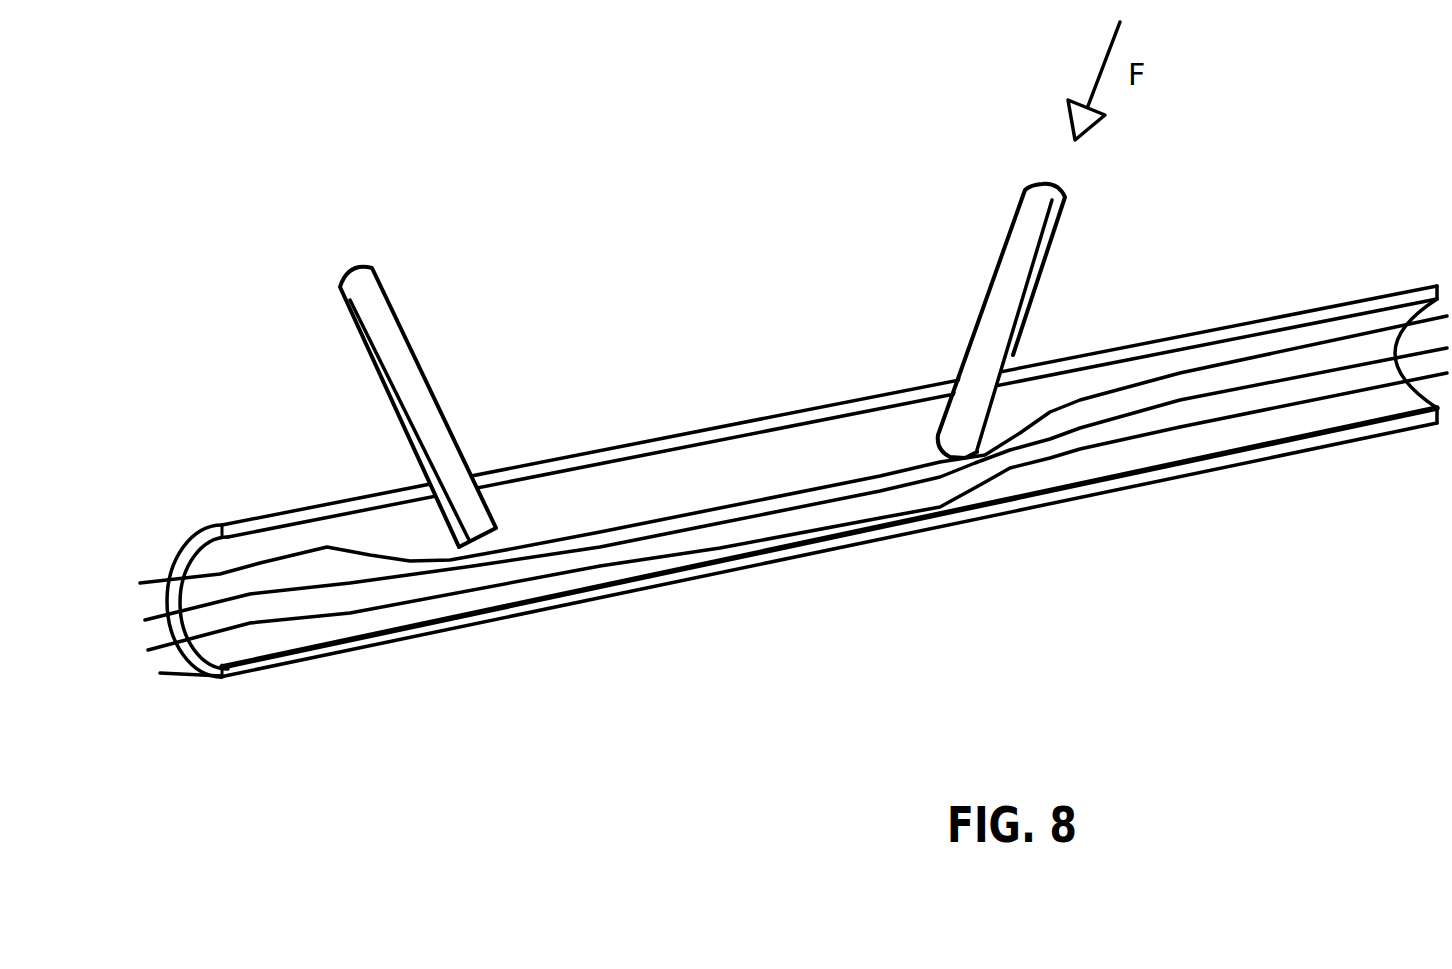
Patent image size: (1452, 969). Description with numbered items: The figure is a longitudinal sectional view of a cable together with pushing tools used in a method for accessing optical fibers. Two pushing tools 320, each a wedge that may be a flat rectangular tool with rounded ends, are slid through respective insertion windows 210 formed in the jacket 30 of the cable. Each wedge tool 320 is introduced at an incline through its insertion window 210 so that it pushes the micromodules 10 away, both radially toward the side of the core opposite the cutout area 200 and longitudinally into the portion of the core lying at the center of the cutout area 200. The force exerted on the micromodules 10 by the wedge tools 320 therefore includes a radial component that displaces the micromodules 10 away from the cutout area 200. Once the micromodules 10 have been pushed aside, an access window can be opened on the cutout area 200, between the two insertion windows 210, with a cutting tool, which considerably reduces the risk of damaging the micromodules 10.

The micromodules 10 is at (173, 672).
The jacket 30 is at (353, 630).
The cutout area 200 is at (932, 323).
The insertion windows 210 is at (426, 486).
The pushing tool 320 is at (368, 356).